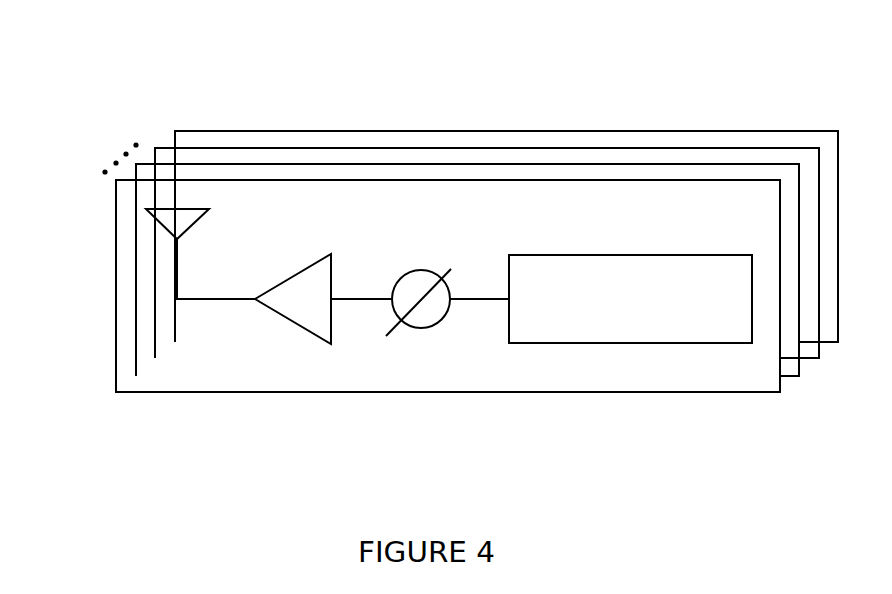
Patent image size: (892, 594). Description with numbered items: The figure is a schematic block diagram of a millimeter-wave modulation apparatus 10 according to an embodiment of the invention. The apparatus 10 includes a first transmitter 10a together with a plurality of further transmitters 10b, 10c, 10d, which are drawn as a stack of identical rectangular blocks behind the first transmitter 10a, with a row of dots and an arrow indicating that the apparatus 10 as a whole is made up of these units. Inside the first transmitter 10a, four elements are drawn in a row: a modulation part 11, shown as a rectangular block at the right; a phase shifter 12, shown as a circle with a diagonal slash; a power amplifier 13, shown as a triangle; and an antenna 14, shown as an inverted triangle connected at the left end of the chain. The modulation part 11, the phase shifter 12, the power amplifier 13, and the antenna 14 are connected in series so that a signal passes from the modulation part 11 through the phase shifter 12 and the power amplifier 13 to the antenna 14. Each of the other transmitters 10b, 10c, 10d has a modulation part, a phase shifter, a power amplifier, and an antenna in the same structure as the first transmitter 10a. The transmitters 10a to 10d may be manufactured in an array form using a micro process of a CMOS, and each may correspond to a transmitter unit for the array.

The millimeter-wave modulation apparatus 10 is at (140, 107).
The first transmitter 10a is at (620, 180).
The transmitter 10b is at (555, 164).
The transmitter 10c is at (478, 148).
The transmitter 10d is at (397, 131).
The modulation part 11 is at (630, 343).
The phase shifter 12 is at (418, 329).
The power amplifier 13 is at (293, 323).
The antenna 14 is at (158, 227).